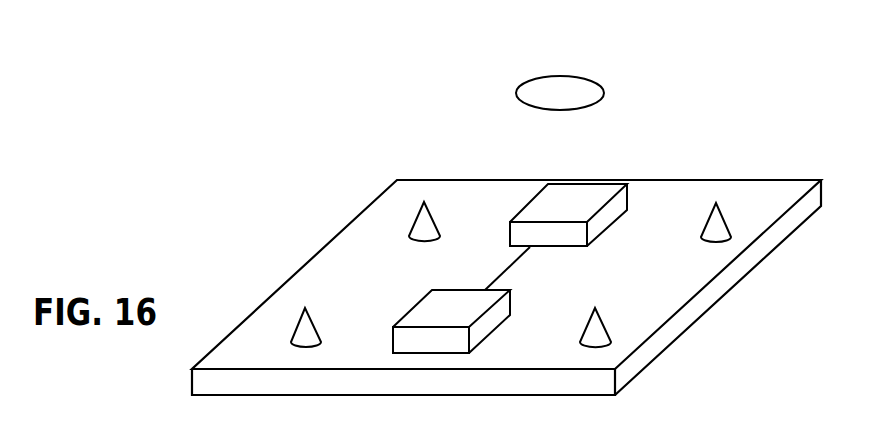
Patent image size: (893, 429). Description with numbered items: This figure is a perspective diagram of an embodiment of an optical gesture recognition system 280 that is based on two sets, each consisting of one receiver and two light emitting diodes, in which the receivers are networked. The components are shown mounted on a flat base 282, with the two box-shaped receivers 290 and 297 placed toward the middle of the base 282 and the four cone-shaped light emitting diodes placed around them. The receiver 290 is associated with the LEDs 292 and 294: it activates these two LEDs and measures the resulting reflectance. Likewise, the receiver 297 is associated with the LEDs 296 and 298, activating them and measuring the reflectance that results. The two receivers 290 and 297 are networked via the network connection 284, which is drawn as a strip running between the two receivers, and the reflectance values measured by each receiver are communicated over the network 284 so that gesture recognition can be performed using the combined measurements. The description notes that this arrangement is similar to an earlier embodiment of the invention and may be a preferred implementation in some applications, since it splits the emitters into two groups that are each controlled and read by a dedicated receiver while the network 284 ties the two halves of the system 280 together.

The optical gesture recognition system 280 is at (750, 93).
The substrate 282 is at (728, 280).
The network connection 284 is at (589, 77).
The receiver 290 is at (578, 216).
The LED 292 is at (725, 218).
The LED 294 is at (435, 208).
The LED 296 is at (316, 327).
The receiver 297 is at (462, 320).
The LED 298 is at (607, 328).